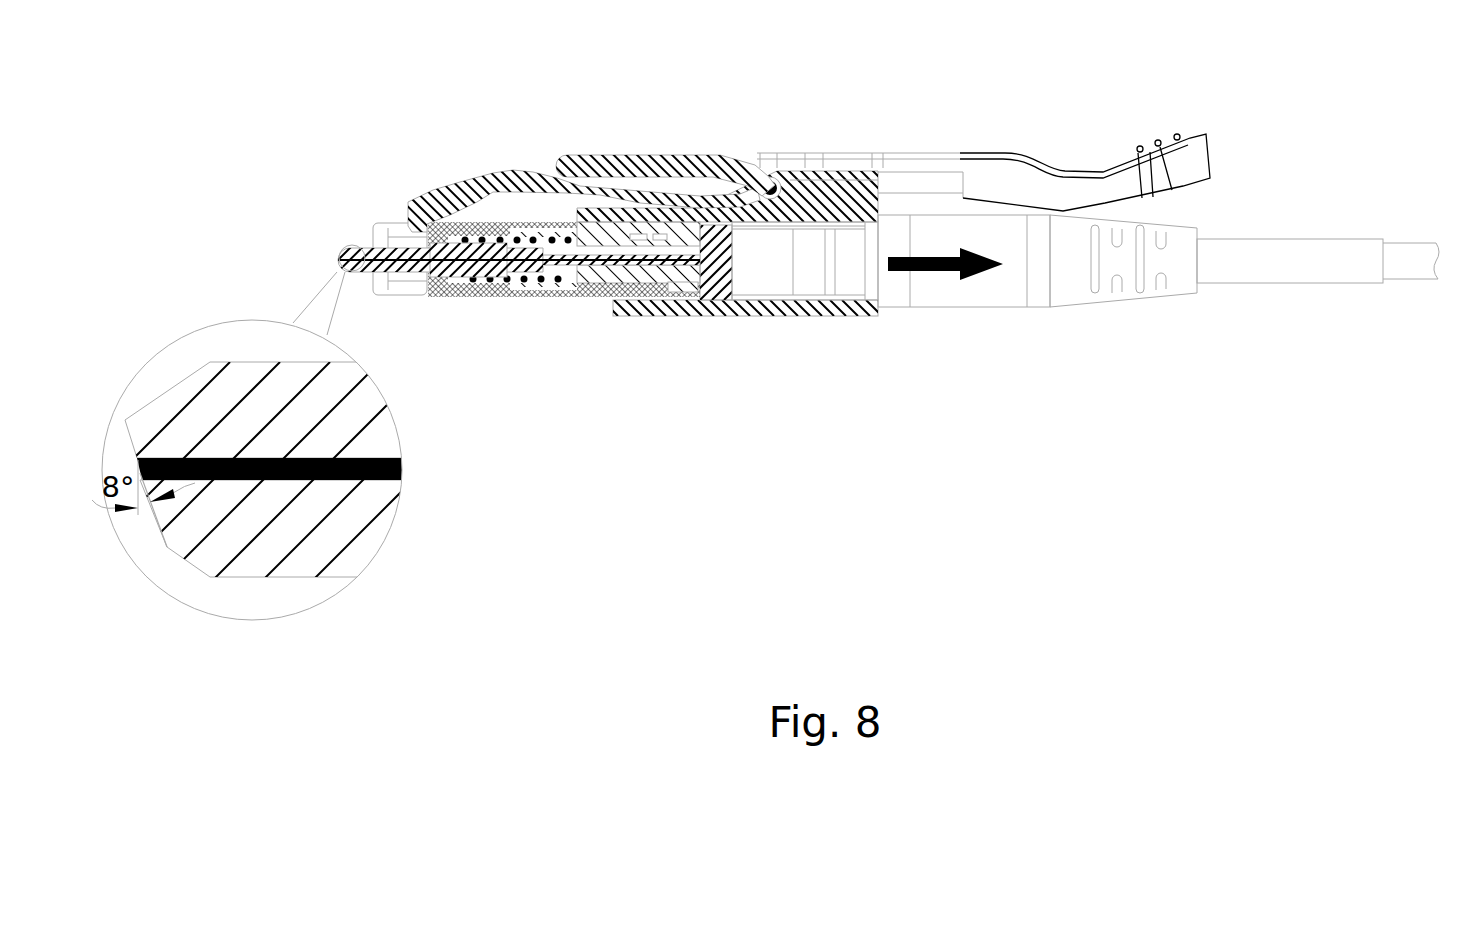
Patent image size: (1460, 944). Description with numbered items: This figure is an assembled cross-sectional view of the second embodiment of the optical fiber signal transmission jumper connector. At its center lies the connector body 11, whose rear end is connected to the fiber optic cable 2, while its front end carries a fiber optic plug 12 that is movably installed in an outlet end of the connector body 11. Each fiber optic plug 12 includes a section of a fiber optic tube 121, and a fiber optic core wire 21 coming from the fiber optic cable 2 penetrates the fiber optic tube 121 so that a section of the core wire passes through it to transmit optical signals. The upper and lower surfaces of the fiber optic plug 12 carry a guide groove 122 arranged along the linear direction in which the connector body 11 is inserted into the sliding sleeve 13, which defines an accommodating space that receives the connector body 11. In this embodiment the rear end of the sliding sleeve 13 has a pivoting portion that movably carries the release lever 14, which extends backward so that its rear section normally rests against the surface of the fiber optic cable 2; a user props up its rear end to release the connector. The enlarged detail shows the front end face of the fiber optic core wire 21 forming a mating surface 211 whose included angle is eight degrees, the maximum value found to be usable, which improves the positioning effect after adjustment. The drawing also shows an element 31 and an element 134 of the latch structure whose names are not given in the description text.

The fiber optic cable 2 is at (1314, 239).
The connector body 11 is at (777, 257).
The fiber optic plug 12 is at (503, 297).
The sliding sleeve 13 is at (760, 316).
The release lever 14 is at (913, 152).
The fiber optic core wire 21 is at (392, 277).
The retaining element 31 is at (652, 297).
The fiber optic tube 121 is at (446, 297).
The guide groove 122 is at (383, 222).
The latch lever 134 is at (460, 200).
The mating surface 211 is at (150, 512).